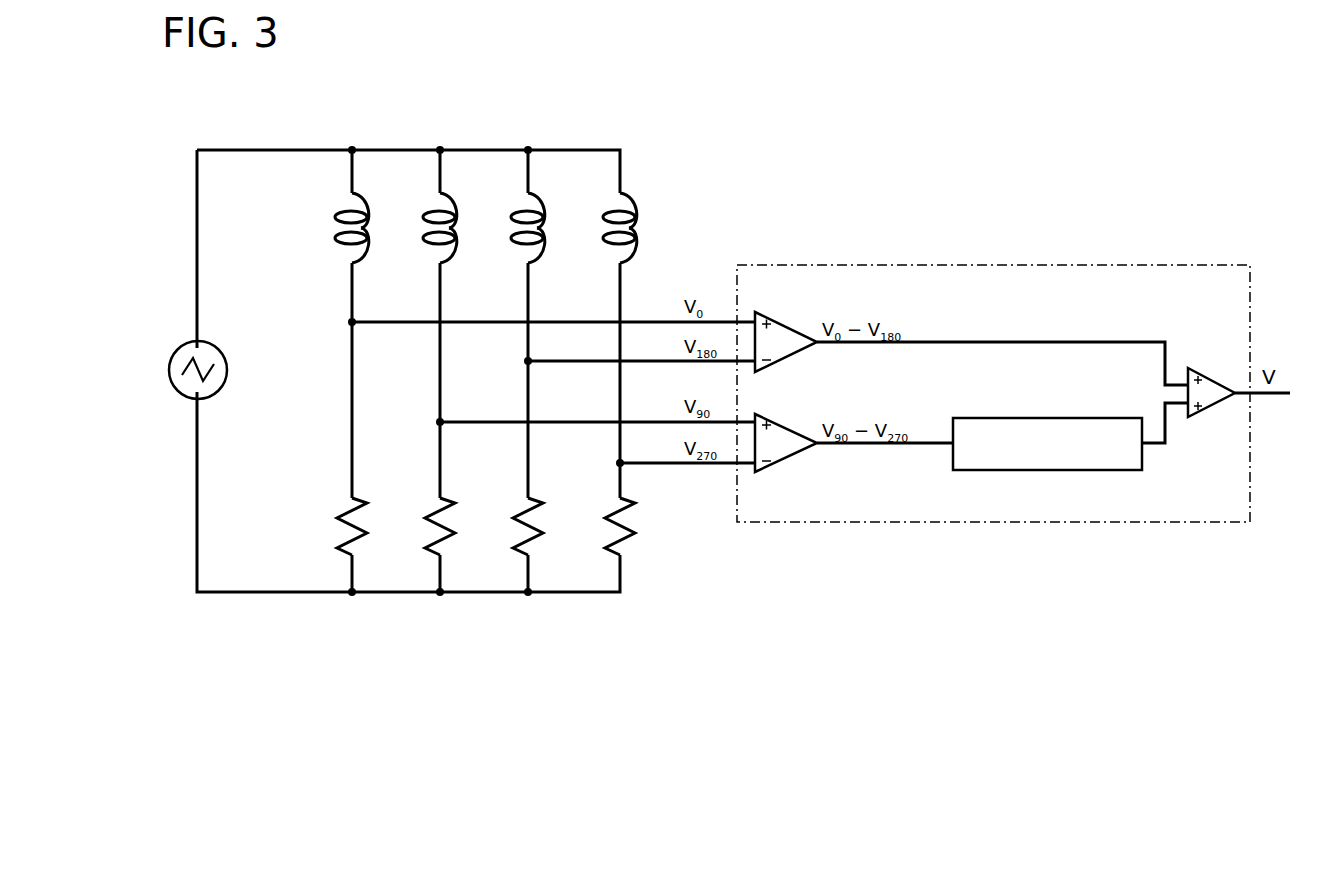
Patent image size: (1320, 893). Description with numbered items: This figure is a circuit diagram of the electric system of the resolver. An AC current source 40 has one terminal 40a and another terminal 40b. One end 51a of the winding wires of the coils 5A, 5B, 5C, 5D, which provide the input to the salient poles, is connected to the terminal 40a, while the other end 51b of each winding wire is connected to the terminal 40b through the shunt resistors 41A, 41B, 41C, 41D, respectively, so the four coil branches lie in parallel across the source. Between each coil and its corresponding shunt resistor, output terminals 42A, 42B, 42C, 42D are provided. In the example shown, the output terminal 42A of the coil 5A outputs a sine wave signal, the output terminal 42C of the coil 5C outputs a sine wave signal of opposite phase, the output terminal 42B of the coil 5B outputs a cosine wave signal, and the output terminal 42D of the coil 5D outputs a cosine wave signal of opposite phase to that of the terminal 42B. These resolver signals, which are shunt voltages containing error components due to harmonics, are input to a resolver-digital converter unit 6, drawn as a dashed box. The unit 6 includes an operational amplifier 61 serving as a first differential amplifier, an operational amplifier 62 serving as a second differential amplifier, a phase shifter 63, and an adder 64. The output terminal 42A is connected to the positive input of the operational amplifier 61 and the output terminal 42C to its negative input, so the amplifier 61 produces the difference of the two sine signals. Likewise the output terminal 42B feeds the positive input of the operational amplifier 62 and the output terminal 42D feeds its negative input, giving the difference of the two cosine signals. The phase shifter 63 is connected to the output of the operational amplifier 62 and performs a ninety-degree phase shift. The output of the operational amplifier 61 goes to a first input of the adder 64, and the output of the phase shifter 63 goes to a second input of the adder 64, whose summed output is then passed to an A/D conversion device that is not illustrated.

The AC current source 40 is at (166, 377).
The one terminal of the AC current source 40a is at (199, 345).
The other terminal of the AC current source 40b is at (199, 397).
The coil 5A is at (340, 236).
The coil 5B is at (428, 236).
The coil 5C is at (516, 236).
The coil 5D is at (608, 236).
The one end of the winding wires 51a is at (358, 194).
The other end of the winding wires 51b is at (357, 264).
The shunt resistor 41A is at (343, 515).
The shunt resistor 41B is at (426, 521).
The shunt resistor 41C is at (519, 515).
The shunt resistor 41D is at (606, 521).
The output terminal 42A is at (350, 324).
The output terminal 42B is at (438, 424).
The output terminal 42C is at (526, 363).
The output terminal 42D is at (617, 464).
The resolver-digital (R/D) converter unit 6 is at (965, 263).
The operational amplifier 61 is at (780, 322).
The operational amplifier 62 is at (798, 465).
The phase shifter 63 is at (1083, 471).
The adder 64 is at (1206, 410).